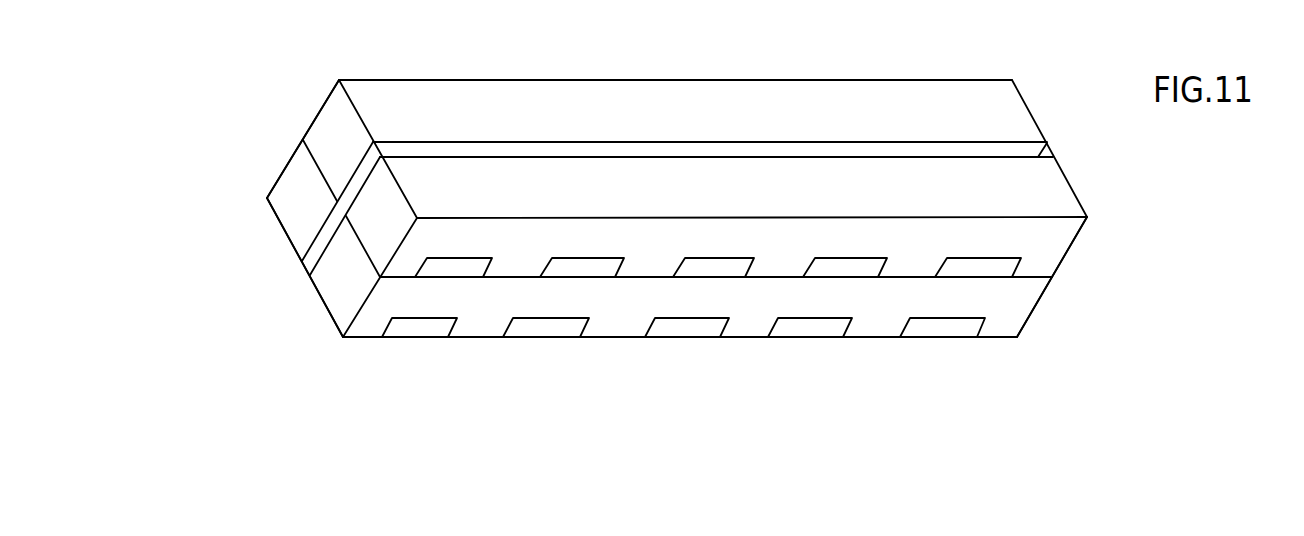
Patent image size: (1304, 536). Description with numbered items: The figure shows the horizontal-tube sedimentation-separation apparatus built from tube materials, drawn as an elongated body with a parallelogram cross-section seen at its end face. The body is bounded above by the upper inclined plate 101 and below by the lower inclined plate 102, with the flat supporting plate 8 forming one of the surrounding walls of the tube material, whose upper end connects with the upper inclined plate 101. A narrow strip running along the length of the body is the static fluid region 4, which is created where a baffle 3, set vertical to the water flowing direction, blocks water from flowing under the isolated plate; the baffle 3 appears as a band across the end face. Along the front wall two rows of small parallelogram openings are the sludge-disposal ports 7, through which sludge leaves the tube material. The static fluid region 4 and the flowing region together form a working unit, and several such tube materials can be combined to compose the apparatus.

The baffle 3 is at (617, 106).
The static fluid region 4 is at (677, 148).
The sludge-disposal port 7 is at (701, 327).
The flat supporting plate 8 is at (592, 270).
The upper inclined plate 101 is at (275, 193).
The lower inclined plate 102 is at (1017, 305).